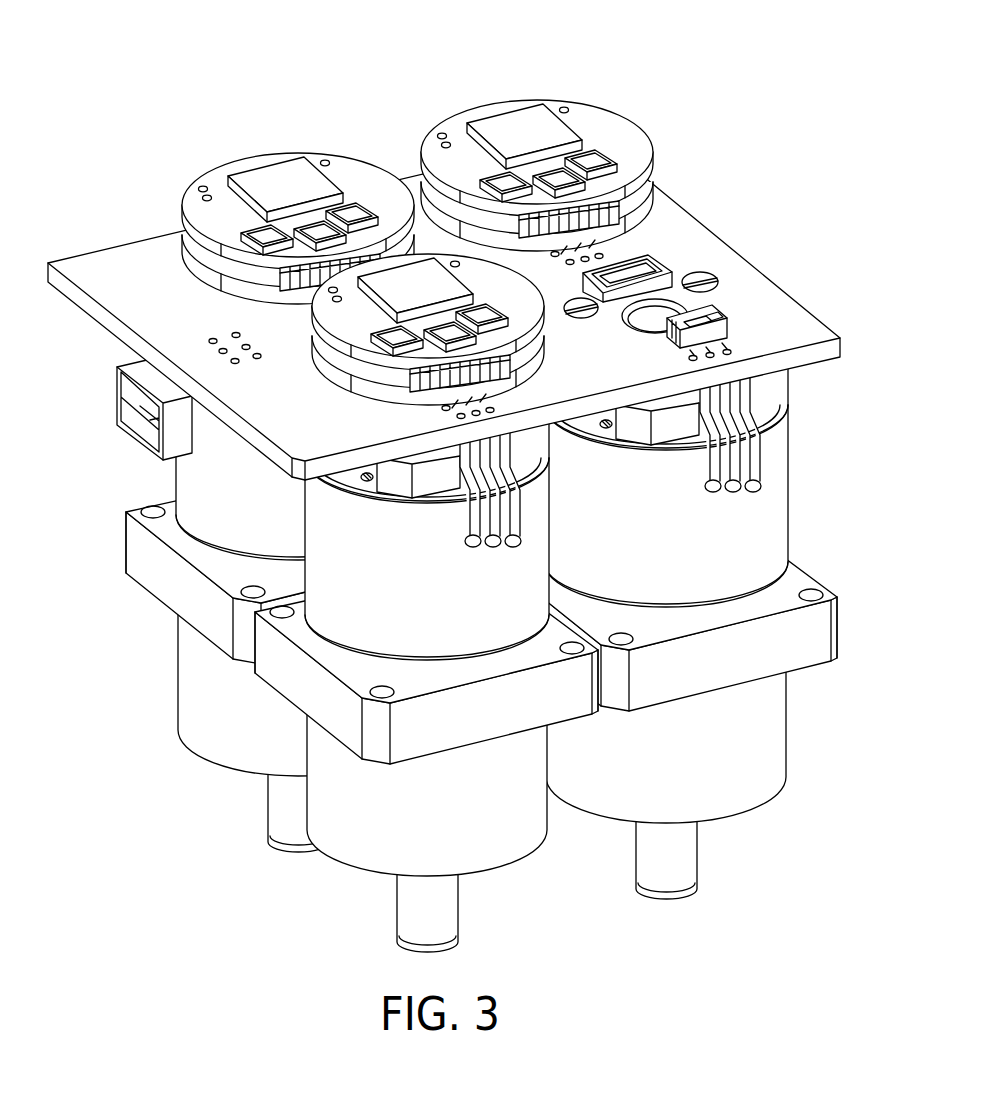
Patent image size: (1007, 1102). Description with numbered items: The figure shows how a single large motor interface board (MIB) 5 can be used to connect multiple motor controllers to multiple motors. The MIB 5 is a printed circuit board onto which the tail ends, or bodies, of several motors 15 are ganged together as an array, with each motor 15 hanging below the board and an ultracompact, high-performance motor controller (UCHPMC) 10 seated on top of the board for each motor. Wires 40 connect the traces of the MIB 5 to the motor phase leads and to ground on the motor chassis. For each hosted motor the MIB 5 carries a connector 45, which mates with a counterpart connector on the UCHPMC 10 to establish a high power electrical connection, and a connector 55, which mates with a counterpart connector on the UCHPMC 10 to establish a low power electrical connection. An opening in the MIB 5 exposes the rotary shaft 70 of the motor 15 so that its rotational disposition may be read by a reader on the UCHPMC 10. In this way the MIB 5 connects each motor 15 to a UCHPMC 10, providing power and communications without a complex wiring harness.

The motor interface board (MIB) 5 is at (117, 277).
The ultracompact, high-performance motor controller (UCHPMC) 10 is at (220, 158).
The motor 15 is at (323, 533).
The wires 40 is at (730, 488).
The connector 45 is at (720, 329).
The connector 55 is at (662, 278).
The rotary shaft 70 is at (658, 316).